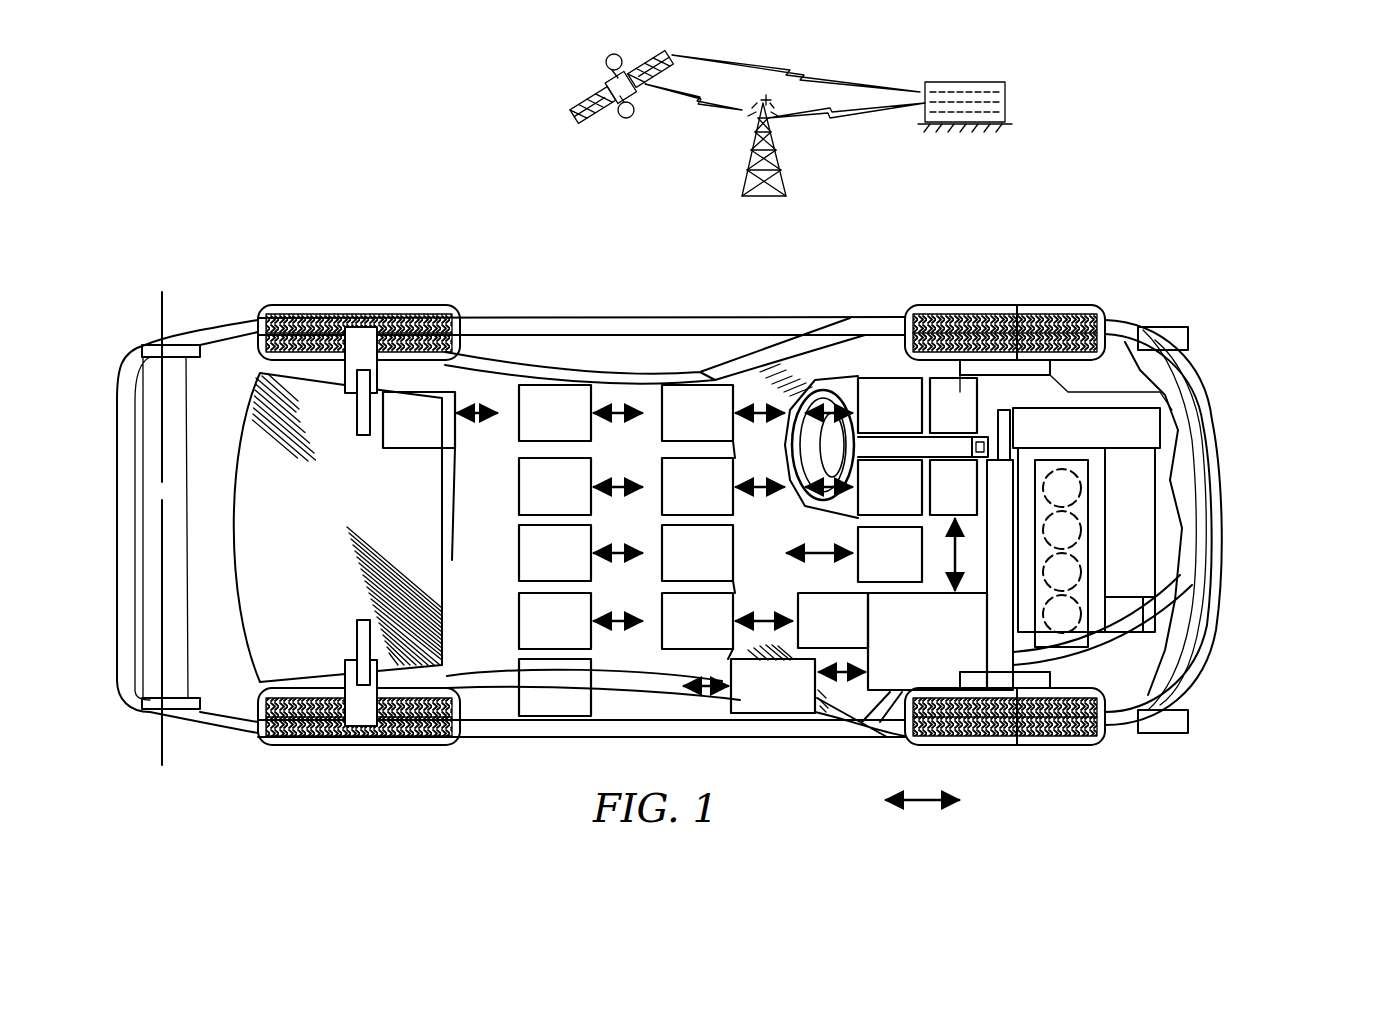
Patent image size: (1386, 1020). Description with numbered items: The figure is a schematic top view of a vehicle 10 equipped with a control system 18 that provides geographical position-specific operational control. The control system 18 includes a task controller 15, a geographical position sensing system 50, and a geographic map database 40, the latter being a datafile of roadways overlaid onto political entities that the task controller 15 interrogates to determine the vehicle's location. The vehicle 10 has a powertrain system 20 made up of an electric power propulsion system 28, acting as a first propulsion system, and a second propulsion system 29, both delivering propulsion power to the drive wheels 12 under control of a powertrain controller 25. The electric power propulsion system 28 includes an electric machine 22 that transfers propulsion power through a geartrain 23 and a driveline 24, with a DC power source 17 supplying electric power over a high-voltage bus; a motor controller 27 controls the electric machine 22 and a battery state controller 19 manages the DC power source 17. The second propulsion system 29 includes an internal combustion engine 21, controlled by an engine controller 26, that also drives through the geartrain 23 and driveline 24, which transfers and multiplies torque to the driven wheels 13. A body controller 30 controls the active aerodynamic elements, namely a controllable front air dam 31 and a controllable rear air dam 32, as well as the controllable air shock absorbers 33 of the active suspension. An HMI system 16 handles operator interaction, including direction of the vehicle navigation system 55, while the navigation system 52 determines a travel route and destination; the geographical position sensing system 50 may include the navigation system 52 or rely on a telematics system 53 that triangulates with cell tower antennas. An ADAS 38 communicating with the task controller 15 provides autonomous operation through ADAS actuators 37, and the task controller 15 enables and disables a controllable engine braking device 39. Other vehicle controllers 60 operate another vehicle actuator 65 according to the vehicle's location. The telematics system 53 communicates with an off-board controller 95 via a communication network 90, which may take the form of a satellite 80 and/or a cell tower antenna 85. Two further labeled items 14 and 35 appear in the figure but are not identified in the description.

The vehicle 10 is at (510, 178).
The drive wheel 12 is at (995, 306).
The driven wheel 13 is at (345, 306).
The axle 14 is at (1017, 352).
The task controller 15 is at (697, 621).
The Human-Machine Interface system 16 is at (890, 405).
The DC power source 17 is at (927, 641).
The control system 18 is at (738, 366).
The battery state controller 19 is at (773, 686).
The powertrain system 20 is at (1284, 364).
The internal combustion engine 21 is at (1065, 530).
The electric machine 22 is at (1140, 530).
The geartrain 23 is at (1125, 430).
The driveline 24 is at (1015, 425).
The powertrain controller 25 is at (697, 413).
The engine controller 26 is at (697, 486).
The motor controller 27 is at (697, 553).
The electric power propulsion system 28 is at (1165, 410).
The second propulsion system 29 is at (1158, 484).
The body controller 30 is at (419, 420).
The controllable front air dam 31 is at (1190, 340).
The controllable rear air dam 32 is at (152, 345).
The controllable air shock absorbers 33 is at (356, 635).
The direction arrow 35 is at (922, 783).
The ADAS actuators 37 is at (953, 525).
The Advanced Driver Assistance System 38 is at (890, 487).
The controllable engine braking device 39 is at (890, 554).
The geographic map database 40 is at (833, 620).
The geographical position sensing system 50 is at (555, 413).
The navigation system 52 is at (555, 486).
The telematics system 53 is at (555, 553).
The vehicle navigation system 55 is at (555, 687).
The other vehicle controllers 60 is at (555, 621).
The vehicle actuator 65 is at (953, 405).
The satellite 80 is at (640, 102).
The cell tower antenna 85 is at (775, 152).
The communication network 90 is at (782, 92).
The off-board controller 95 is at (1012, 97).